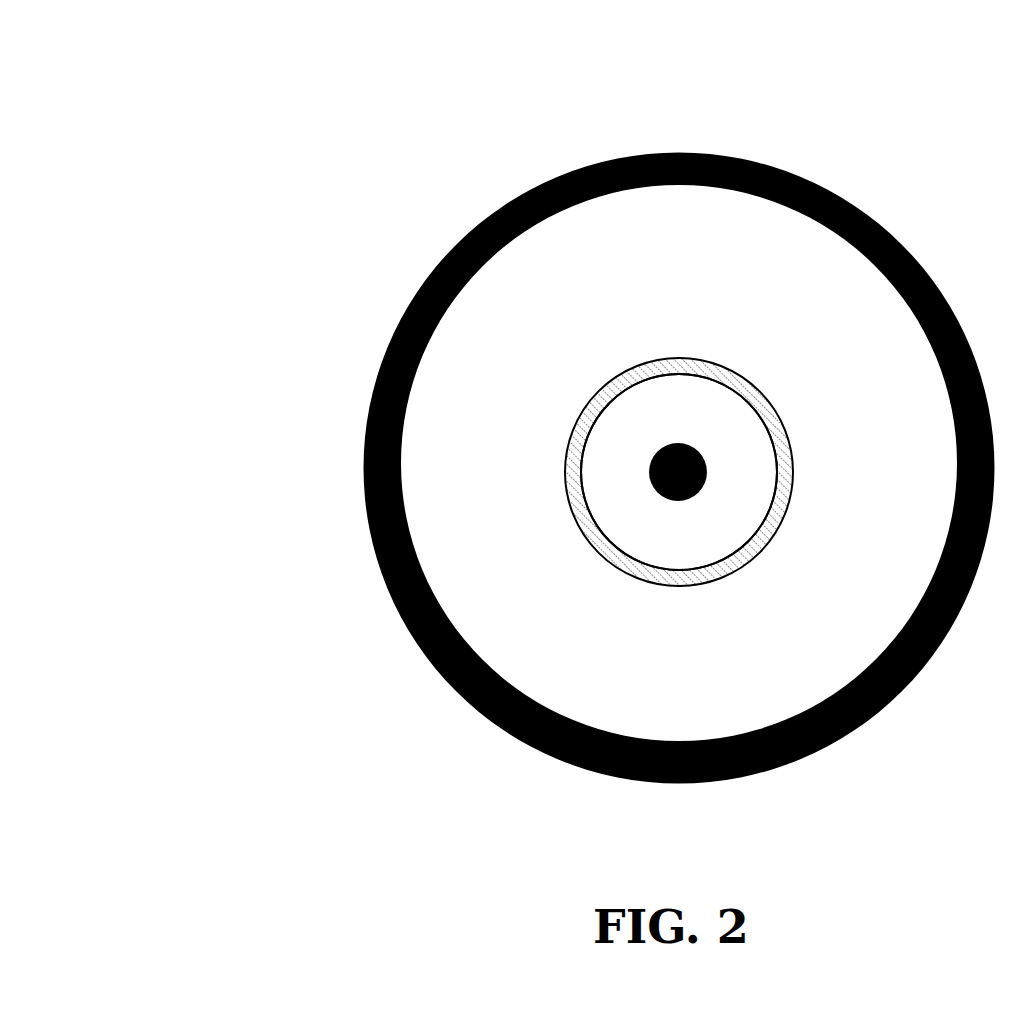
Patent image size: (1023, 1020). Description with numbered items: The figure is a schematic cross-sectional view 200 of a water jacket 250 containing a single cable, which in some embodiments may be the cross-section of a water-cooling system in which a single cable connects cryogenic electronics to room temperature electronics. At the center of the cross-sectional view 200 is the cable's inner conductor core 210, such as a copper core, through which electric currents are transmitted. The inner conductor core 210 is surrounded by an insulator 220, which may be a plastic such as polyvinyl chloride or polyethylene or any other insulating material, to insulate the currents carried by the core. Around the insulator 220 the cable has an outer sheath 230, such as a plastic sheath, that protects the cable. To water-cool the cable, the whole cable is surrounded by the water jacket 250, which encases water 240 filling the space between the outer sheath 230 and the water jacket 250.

The cross-sectional view 200 is at (170, 95).
The inner conductor core 210 is at (655, 492).
The insulator 220 is at (715, 433).
The outer sheath 230 is at (677, 359).
The water 240 is at (699, 673).
The water jacket 250 is at (818, 184).